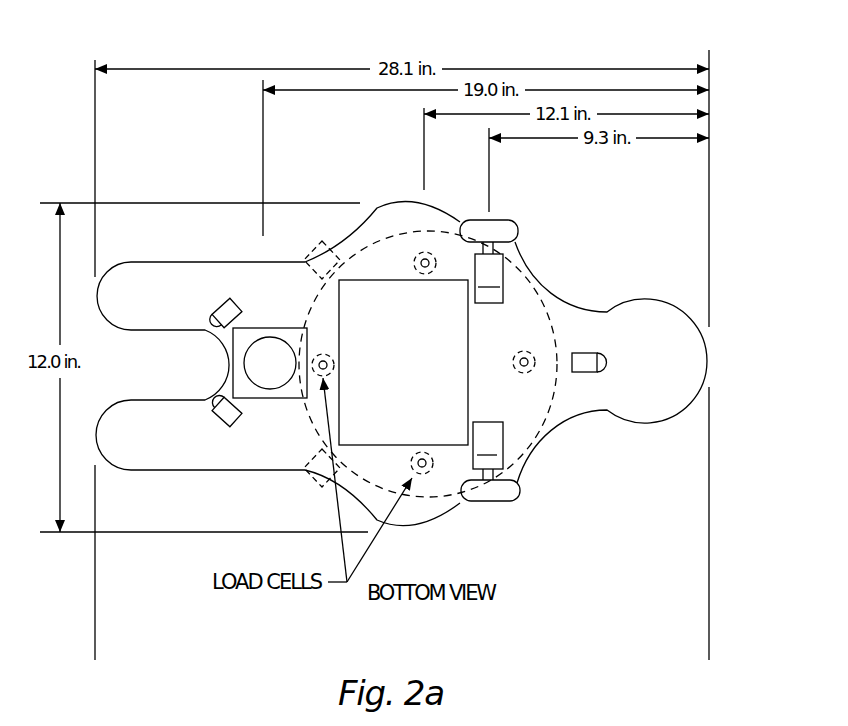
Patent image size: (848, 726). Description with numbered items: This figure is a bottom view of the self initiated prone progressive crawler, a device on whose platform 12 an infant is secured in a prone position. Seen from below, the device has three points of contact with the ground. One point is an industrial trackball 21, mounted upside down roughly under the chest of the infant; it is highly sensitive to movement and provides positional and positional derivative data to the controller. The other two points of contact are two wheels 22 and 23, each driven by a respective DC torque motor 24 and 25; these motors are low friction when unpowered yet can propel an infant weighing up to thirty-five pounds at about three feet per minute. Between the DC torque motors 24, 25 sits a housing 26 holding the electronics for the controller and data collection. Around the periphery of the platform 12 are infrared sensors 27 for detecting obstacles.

The platform 12 is at (697, 364).
The industrial trackball 21 is at (203, 461).
The wheel 22 is at (557, 531).
The wheel 23 is at (561, 208).
The DC torque motor 24 is at (505, 446).
The DC torque motor 25 is at (490, 305).
The housing 26 is at (410, 397).
The infrared (IR) sensors 27 is at (223, 401).